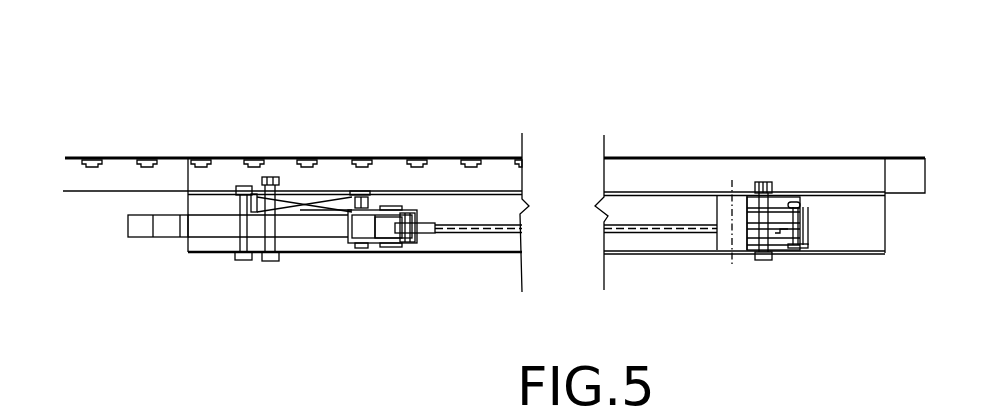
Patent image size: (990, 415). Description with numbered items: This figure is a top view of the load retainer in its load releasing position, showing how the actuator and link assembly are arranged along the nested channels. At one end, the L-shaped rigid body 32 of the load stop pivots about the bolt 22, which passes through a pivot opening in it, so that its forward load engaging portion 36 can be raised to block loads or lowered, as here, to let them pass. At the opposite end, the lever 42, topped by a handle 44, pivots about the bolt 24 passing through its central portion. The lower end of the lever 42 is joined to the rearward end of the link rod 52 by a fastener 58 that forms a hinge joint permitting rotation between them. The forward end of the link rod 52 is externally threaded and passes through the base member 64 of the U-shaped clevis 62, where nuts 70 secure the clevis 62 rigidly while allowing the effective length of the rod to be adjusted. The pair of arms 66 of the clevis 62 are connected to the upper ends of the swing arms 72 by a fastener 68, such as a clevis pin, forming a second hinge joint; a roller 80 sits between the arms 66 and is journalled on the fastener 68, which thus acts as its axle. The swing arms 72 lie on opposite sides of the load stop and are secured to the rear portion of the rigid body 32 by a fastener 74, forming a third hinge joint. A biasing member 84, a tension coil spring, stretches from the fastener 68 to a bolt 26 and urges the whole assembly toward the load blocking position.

The bolt 22 is at (241, 253).
The bolt 24 is at (782, 283).
The bolt 26 is at (190, 254).
The rigid body 32 is at (189, 229).
The load engaging portion 36 is at (108, 169).
The lever 42 is at (803, 147).
The handle 44 is at (692, 149).
The link rod 52 is at (576, 284).
The fastener 58 is at (854, 226).
The clevis 62 is at (487, 160).
The base member 64 is at (471, 150).
The arms 66 is at (446, 190).
The fastener 68 is at (387, 151).
The nuts 70 is at (453, 275).
The swing arms 72 is at (375, 279).
The fastener 74 is at (277, 148).
The roller 80 is at (313, 124).
The biasing member 84 is at (182, 142).